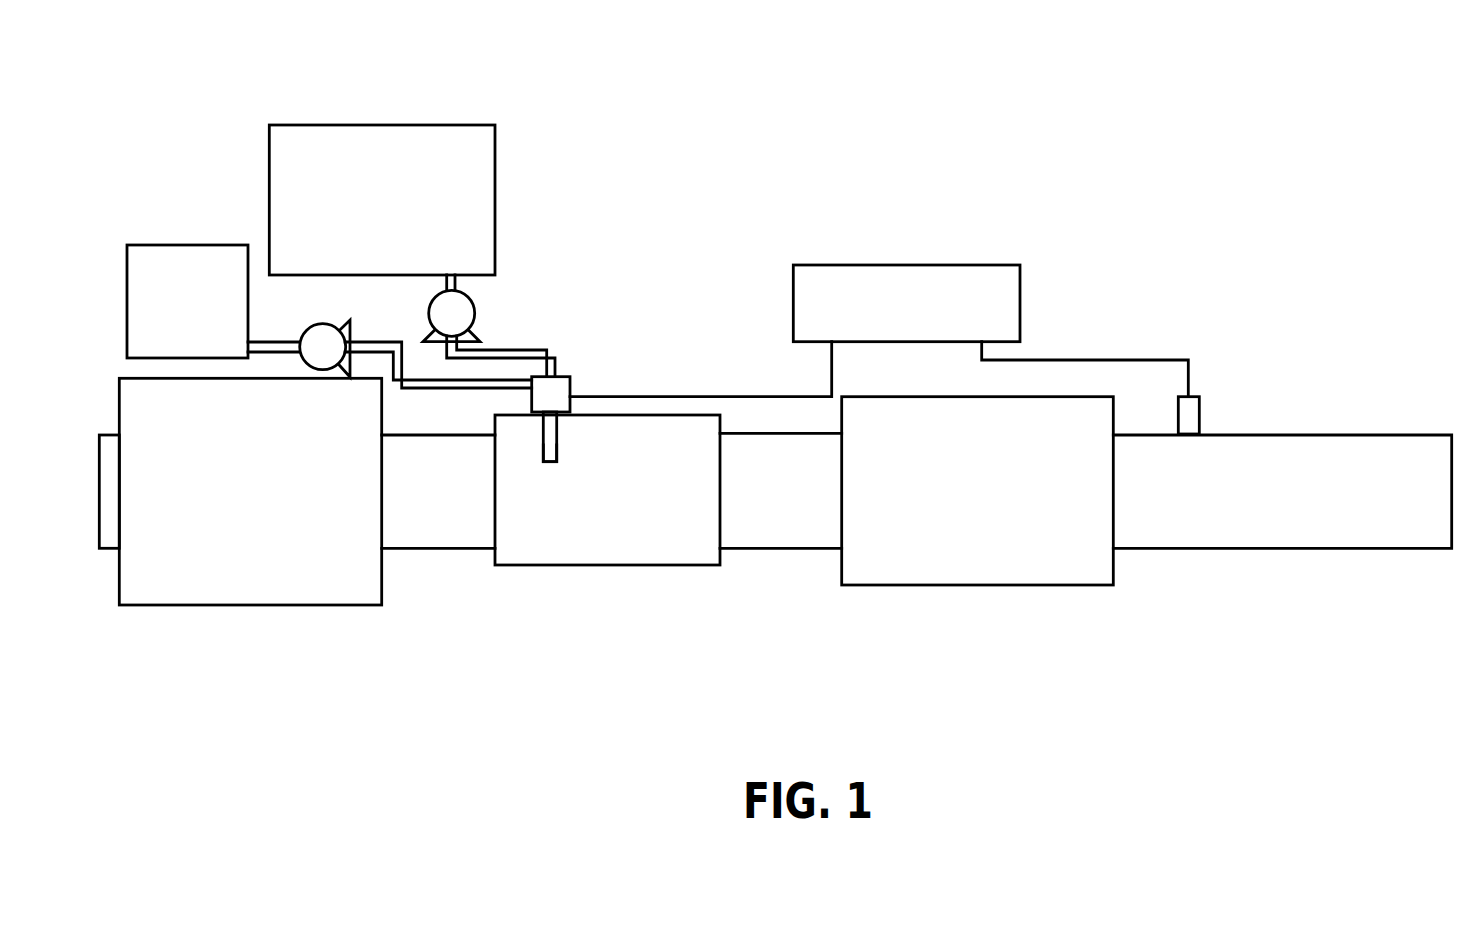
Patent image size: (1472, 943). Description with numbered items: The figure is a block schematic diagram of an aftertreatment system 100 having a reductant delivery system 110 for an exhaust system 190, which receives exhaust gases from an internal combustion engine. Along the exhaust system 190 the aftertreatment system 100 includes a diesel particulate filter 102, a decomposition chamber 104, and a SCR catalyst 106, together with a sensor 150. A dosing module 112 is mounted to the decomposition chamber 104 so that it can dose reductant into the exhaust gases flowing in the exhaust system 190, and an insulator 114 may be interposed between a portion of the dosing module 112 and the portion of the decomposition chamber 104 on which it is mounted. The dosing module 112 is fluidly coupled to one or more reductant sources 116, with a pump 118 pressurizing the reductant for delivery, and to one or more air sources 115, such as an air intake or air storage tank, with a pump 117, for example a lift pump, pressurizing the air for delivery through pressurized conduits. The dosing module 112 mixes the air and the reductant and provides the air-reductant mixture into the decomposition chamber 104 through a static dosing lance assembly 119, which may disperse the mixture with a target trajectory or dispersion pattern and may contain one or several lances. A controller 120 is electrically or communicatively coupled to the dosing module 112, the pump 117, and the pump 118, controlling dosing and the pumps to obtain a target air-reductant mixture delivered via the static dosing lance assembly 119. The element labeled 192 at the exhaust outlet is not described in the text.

The aftertreatment system 100 is at (1070, 337).
The diesel particulate filter 102 is at (283, 607).
The decomposition chamber 104 is at (708, 415).
The SCR catalyst 106 is at (985, 585).
The reductant delivery system 110 is at (675, 318).
The dosing module 112 is at (573, 387).
The insulator 114 is at (533, 412).
The air sources 115 is at (215, 245).
The reductant sources 116 is at (450, 125).
The pump 117 is at (347, 321).
The pump 118 is at (431, 321).
The static dosing lance assembly 119 is at (558, 440).
The controller 120 is at (892, 265).
The sensor 150 is at (1225, 412).
The exhaust system 190 is at (484, 638).
The tailpipe / exhaust outlet 192 is at (1366, 552).